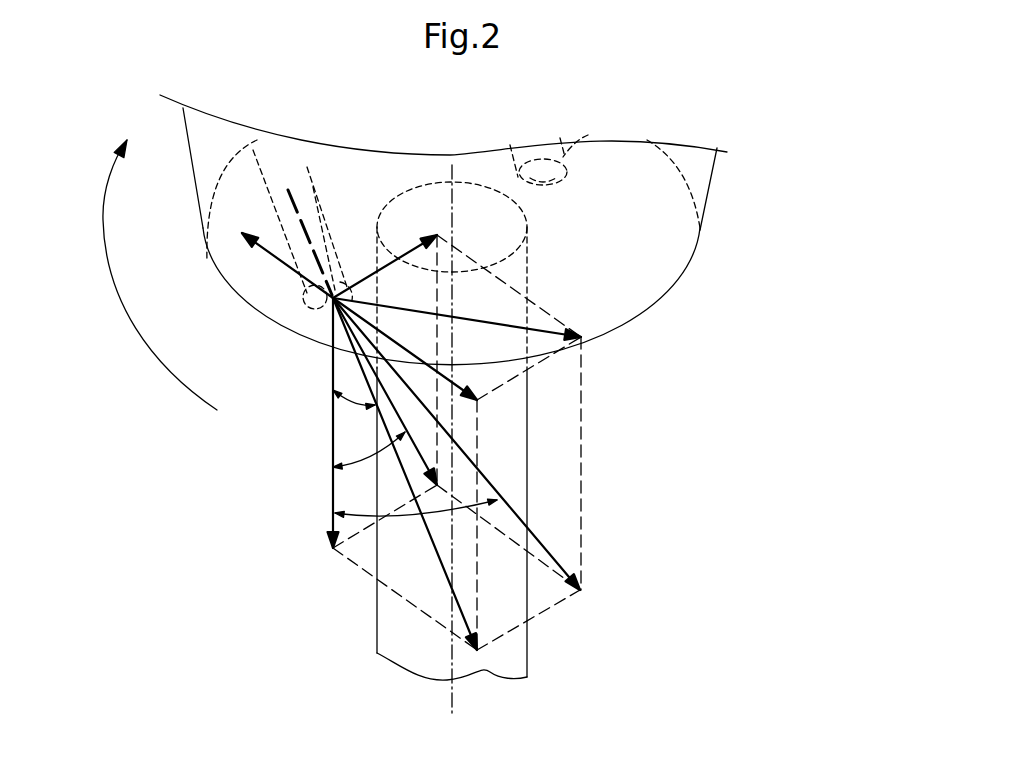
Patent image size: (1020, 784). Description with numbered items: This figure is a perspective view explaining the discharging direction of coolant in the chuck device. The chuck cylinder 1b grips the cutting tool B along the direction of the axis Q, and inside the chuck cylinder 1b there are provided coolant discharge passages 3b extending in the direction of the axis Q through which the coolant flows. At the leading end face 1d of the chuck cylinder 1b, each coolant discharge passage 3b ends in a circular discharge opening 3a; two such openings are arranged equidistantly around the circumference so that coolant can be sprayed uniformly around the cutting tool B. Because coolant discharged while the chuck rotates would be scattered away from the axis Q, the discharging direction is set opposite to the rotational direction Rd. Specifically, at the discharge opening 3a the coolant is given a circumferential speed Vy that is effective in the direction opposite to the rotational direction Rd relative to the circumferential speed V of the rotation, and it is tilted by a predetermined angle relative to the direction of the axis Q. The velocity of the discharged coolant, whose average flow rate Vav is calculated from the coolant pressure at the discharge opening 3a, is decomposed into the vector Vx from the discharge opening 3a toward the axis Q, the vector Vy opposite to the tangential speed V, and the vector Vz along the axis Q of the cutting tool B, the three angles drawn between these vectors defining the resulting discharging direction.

The chuck cylinder 1b is at (702, 180).
The leading end face 1d is at (660, 312).
The discharge opening 3a is at (550, 187).
The coolant discharge passage 3b is at (313, 187).
The cutting tool B is at (527, 653).
The axis Q is at (453, 458).
The rotational direction Rd is at (145, 275).
The circumferential speed V is at (270, 253).
The velocity vector toward the axis Vx is at (362, 275).
The circumferential speed component Vy is at (403, 347).
The axial velocity vector Vz is at (333, 425).
The average flow rate Vav is at (545, 540).